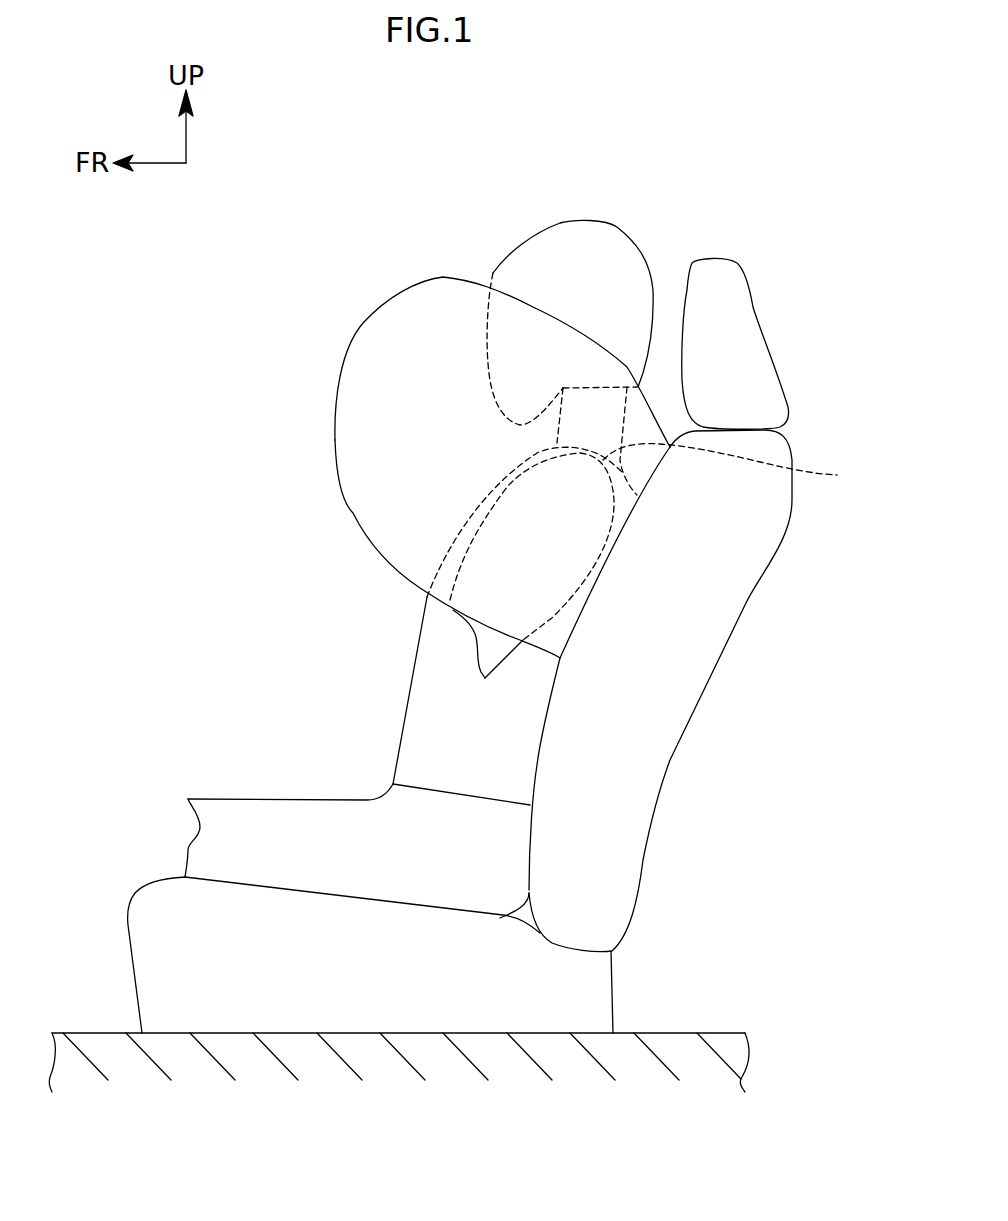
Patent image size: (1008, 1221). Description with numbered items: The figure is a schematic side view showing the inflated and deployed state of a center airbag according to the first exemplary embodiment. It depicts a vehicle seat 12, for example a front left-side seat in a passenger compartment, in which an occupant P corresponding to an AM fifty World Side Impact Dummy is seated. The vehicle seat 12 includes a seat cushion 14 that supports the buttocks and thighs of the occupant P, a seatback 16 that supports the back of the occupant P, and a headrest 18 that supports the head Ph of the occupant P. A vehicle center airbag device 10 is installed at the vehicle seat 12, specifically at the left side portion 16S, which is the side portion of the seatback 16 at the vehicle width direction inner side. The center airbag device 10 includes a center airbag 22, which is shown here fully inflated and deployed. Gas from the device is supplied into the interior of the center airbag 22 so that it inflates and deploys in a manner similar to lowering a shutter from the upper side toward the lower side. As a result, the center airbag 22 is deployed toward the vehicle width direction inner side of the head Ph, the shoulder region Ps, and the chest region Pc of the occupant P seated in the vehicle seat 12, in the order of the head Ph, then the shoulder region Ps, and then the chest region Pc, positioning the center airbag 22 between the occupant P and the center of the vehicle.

The vehicle center airbag device 10 is at (420, 268).
The vehicle seat 12 is at (743, 272).
The seat cushion 14 is at (155, 950).
The seatback 16 is at (728, 625).
The left side portion 16S is at (677, 690).
The headrest 18 is at (748, 347).
The center airbag 22 is at (345, 488).
The occupant P is at (580, 217).
The head Ph is at (608, 245).
The shoulder region Ps is at (738, 468).
The chest region Pc is at (462, 521).